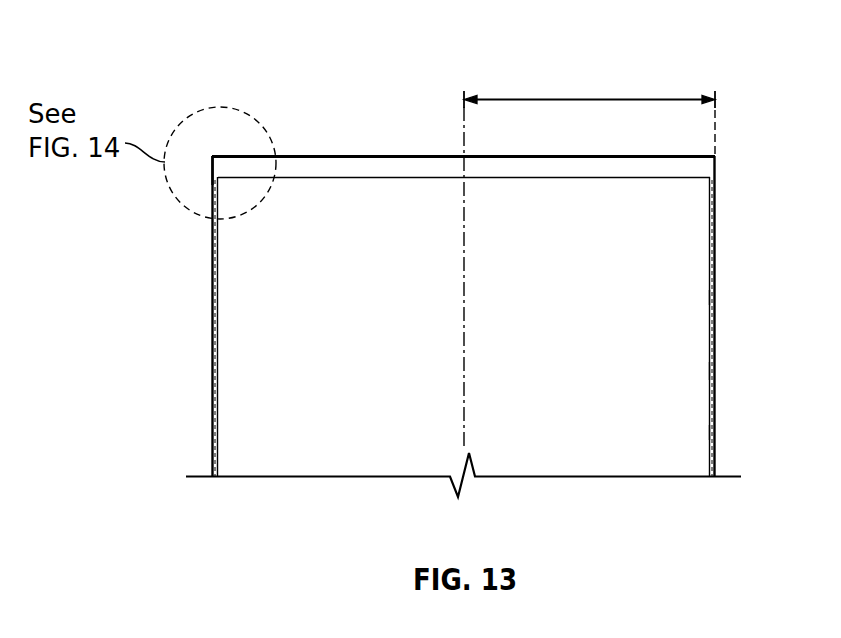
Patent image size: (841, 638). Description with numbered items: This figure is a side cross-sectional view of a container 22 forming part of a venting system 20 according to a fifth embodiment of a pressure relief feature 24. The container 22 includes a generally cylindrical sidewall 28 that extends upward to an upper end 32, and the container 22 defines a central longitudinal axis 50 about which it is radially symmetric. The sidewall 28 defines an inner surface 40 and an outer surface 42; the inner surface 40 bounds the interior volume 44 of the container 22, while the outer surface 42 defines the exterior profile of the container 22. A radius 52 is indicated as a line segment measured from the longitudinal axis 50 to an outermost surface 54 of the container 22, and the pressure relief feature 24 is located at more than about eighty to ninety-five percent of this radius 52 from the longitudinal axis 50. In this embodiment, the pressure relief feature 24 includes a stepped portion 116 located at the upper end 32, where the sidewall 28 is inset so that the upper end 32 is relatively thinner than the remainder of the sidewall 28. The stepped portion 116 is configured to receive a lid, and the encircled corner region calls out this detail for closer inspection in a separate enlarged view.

The venting system 20 is at (474, 282).
The container 22 is at (716, 228).
The pressure relief feature 24 is at (201, 141).
The sidewall 28 is at (212, 320).
The upper end 32 is at (714, 178).
The inner surface 40 is at (710, 433).
The outer surface 42 is at (715, 372).
The interior volume 44 is at (326, 348).
The longitudinal axis 50 is at (463, 138).
The radius 52 is at (590, 98).
The outermost surface 54 is at (715, 297).
The stepped portion 116 is at (219, 163).